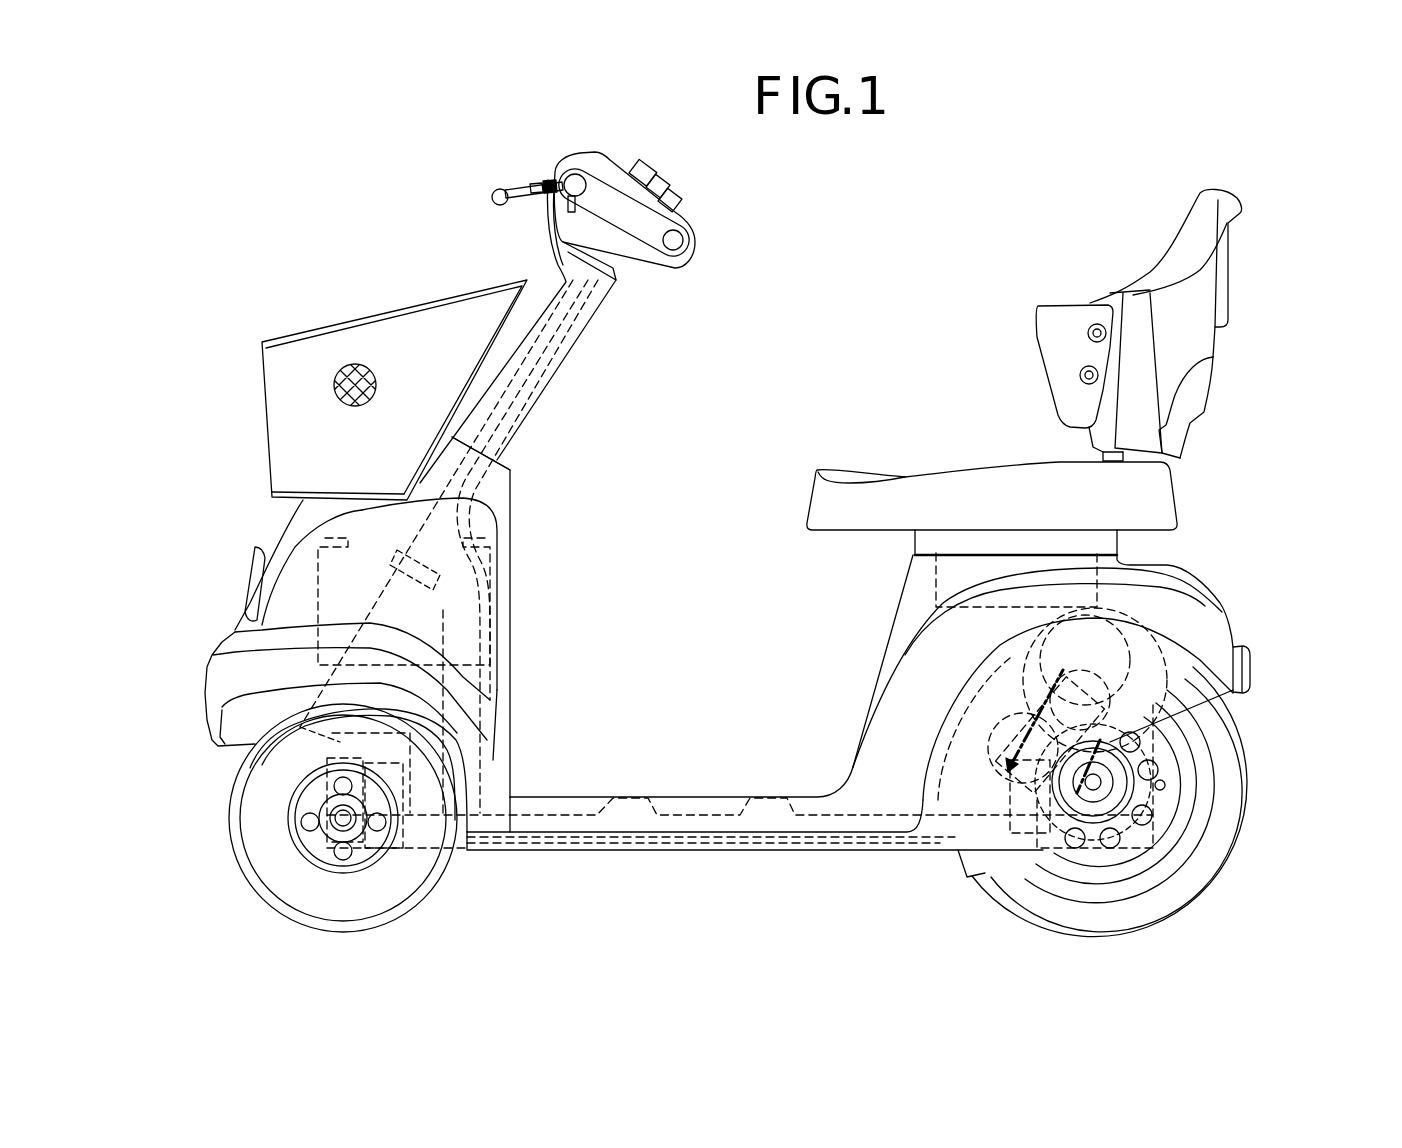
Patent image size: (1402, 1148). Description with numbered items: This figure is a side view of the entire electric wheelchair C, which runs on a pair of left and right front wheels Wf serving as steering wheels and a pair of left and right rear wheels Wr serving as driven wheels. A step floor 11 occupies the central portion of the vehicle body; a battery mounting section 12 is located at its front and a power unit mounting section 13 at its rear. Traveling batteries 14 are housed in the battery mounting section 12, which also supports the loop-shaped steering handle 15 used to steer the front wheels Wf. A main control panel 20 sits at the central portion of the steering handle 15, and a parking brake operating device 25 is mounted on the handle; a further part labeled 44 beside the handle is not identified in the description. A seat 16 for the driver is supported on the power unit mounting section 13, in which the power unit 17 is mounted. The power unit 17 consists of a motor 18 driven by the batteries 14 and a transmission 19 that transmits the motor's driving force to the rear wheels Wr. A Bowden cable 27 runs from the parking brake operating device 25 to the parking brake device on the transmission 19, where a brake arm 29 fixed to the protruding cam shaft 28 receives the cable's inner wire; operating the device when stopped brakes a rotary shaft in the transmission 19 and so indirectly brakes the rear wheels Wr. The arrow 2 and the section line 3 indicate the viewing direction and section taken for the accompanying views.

The section arrow FIG. 2 is at (855, 148).
The section line FIG. 3 is at (1106, 660).
The step floor 11 is at (655, 797).
The battery mounting section 12 is at (300, 560).
The power unit mounting section 13 is at (912, 700).
The traveling batteries 14 is at (357, 556).
The loop-shaped steering handle 15 is at (640, 230).
The seat 16 is at (1020, 466).
The power unit 17 is at (1004, 692).
The motor 18 is at (1207, 641).
The transmission 19 is at (1041, 765).
The main control panel 20 is at (612, 172).
The parking brake operating device 25 is at (508, 188).
The Bowden cable 27 is at (558, 326).
The cam shaft 28 is at (1152, 708).
The brake arm 29 is at (1028, 752).
The handlebar 44 is at (522, 205).
The electric wheelchair C is at (773, 387).
The front wheels Wf is at (250, 816).
The rear wheels Wr is at (1210, 755).